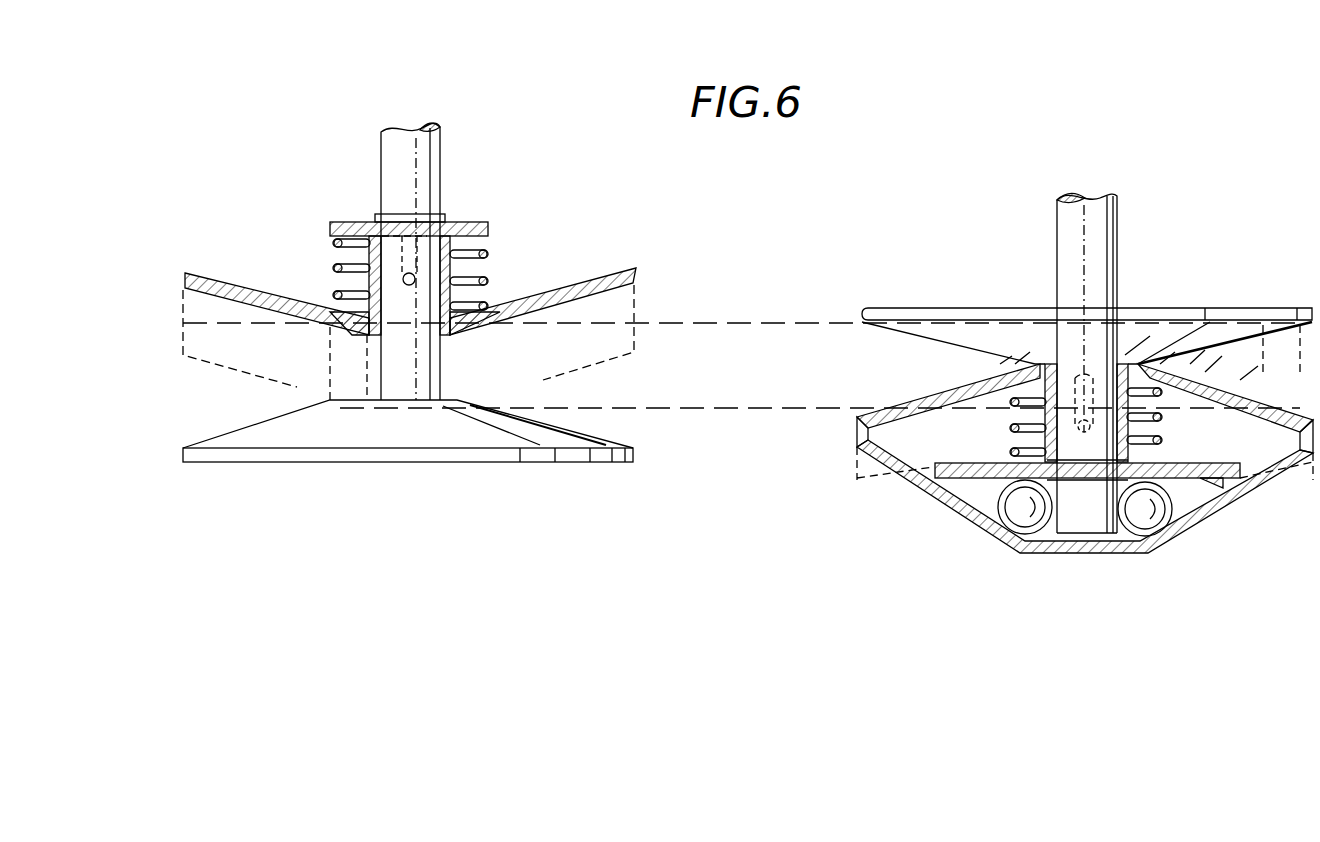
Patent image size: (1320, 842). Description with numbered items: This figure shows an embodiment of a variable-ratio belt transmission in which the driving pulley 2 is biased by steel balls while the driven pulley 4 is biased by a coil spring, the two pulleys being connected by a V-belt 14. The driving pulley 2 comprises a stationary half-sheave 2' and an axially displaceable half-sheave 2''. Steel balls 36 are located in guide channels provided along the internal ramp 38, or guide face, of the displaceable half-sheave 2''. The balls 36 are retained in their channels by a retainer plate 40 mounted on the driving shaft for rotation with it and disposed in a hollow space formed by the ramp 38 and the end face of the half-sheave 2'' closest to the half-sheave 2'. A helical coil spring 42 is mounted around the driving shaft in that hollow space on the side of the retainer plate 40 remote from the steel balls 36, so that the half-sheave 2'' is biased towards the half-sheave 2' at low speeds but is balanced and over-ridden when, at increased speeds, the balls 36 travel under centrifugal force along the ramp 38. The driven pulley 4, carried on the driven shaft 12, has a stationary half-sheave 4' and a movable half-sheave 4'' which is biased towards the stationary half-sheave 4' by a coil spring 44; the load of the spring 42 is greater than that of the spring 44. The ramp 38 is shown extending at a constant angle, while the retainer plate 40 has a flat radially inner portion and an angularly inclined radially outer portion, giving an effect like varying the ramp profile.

The driving pulley 2 is at (1085, 363).
The stationary half-sheave 2' is at (1087, 295).
The axially movable half-sheave 2'' is at (1085, 451).
The driven pulley 4 is at (408, 374).
The stationary half-sheave 4' is at (408, 475).
The axially movable half-sheave 4'' is at (410, 287).
The driven shaft 12 is at (410, 163).
The V-belt 14 is at (738, 324).
The steel balls 36 is at (1140, 523).
The internal ramp 38 is at (1205, 515).
The retainer plate 40 is at (1185, 463).
The helical coil spring 42 is at (1010, 426).
The coil spring 44 is at (333, 268).